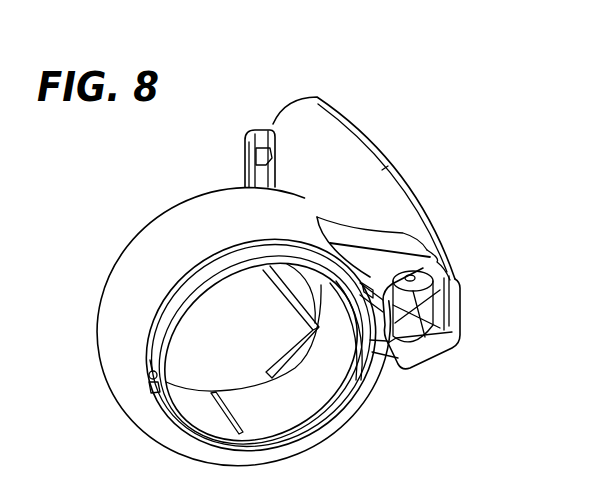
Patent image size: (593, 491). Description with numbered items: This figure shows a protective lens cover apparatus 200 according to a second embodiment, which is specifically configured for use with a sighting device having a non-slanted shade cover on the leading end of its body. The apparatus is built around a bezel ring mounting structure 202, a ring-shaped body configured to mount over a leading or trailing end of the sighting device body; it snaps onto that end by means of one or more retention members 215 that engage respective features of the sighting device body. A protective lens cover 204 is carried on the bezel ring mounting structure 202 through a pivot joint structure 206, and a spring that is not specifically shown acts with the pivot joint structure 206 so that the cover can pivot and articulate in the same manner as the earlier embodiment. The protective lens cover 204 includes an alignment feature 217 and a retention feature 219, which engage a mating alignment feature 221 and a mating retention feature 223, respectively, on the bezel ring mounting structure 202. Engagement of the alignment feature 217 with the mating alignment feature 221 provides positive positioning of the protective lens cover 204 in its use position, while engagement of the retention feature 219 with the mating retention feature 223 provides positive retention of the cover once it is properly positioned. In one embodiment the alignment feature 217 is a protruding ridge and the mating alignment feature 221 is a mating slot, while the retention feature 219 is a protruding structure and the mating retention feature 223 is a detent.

The protective lens cover apparatus 200 is at (404, 141).
The bezel ring mounting structure 202 is at (135, 267).
The protective lens cover 204 is at (300, 99).
The pivot joint structure 206 is at (448, 302).
The retention member 215 is at (278, 360).
The alignment feature 217 is at (263, 180).
The retention feature 219 is at (269, 160).
The mating alignment feature 221 is at (158, 336).
The mating retention feature 223 is at (150, 378).